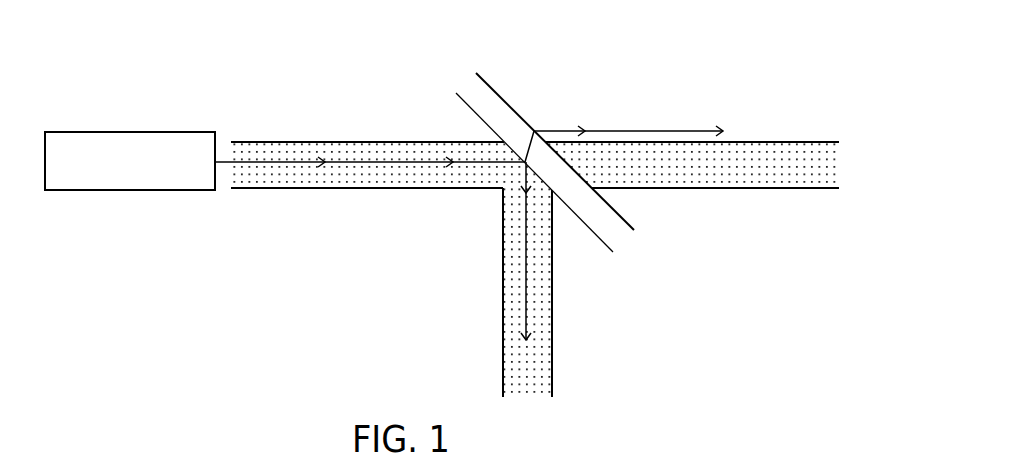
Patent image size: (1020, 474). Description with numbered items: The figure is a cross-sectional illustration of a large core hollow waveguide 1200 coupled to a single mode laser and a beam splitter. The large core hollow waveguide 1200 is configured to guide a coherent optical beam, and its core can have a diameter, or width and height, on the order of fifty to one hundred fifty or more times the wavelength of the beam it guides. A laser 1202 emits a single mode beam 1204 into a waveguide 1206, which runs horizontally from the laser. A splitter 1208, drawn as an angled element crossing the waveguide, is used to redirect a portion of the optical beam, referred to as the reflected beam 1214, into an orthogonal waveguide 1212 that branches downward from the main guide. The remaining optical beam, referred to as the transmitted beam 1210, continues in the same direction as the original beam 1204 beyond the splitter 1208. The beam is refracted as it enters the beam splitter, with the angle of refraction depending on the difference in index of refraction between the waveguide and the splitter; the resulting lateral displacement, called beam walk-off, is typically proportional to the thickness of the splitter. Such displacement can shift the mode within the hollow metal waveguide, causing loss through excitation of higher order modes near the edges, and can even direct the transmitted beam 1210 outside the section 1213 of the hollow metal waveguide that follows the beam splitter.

The large core hollow waveguide 1200 is at (442, 207).
The laser 1202 is at (133, 190).
The single mode beam 1204 is at (350, 163).
The waveguide 1206 is at (263, 188).
The splitter 1208 is at (493, 88).
The transmitted beam 1210 is at (693, 130).
The orthogonal waveguide 1212 is at (552, 298).
The section of the hollow metal waveguide 1213 is at (799, 188).
The reflected beam 1214 is at (525, 301).